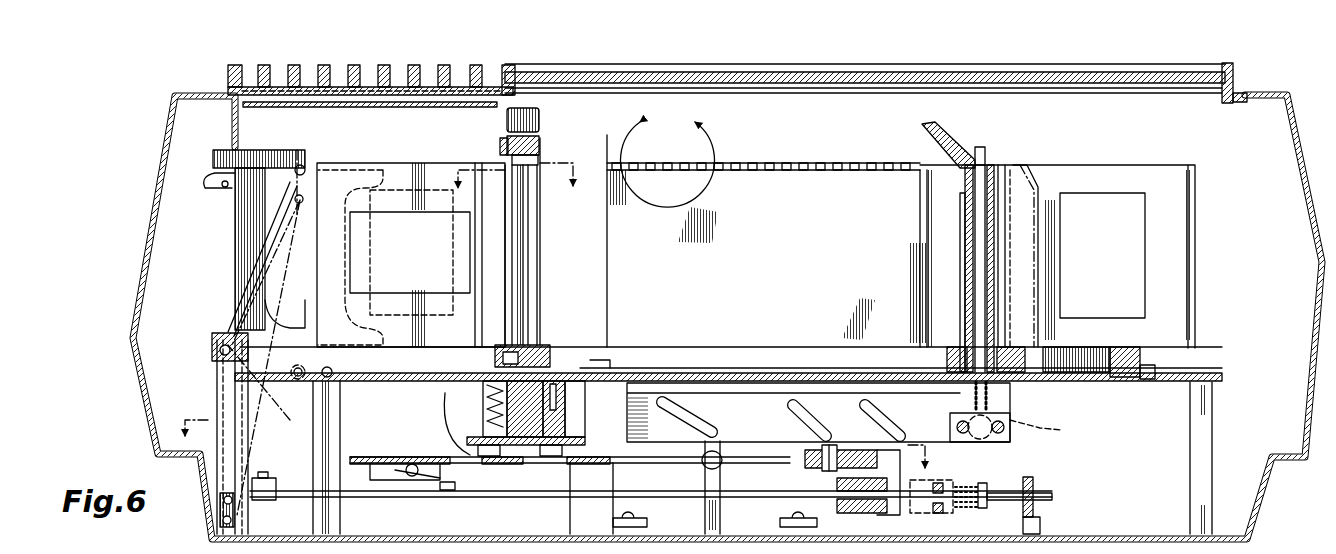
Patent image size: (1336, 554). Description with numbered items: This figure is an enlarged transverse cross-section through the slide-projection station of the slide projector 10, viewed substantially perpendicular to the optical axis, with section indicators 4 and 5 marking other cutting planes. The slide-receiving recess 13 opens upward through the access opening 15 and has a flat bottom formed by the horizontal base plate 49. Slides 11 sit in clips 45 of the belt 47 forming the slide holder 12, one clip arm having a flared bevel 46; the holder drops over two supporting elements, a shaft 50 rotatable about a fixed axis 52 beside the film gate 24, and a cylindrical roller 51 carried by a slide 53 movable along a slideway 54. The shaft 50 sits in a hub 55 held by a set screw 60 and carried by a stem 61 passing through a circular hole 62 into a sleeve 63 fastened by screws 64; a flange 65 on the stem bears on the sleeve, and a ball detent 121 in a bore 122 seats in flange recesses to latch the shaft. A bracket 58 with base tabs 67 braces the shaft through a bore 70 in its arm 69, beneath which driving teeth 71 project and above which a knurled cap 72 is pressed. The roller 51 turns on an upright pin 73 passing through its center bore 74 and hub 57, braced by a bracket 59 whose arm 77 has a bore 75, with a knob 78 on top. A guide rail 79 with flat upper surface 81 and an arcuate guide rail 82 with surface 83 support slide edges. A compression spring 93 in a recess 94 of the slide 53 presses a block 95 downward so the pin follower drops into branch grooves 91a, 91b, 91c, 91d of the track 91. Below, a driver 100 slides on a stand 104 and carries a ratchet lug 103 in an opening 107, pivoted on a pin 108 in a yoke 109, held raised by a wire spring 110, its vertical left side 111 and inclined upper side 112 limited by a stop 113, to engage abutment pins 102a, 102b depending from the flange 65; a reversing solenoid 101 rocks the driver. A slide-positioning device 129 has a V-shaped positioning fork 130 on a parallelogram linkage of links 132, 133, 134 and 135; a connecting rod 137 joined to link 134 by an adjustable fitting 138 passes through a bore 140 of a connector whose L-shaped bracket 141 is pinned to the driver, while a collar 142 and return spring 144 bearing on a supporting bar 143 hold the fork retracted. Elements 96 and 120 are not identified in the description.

The section line 4 is at (668, 159).
The section line 5 is at (508, 189).
The slide projector 10 is at (232, 113).
The slide 11 is at (410, 163).
The slide holder 12 is at (827, 158).
The slide-receiving recess 13 is at (760, 140).
The access opening 15 is at (1218, 98).
The film gate 24 is at (421, 158).
The clip 45 is at (480, 322).
The flared bevel 46 is at (1050, 165).
The belt 47 is at (853, 222).
The base plate 49 is at (800, 372).
The shaft 50 is at (528, 233).
The roller 51 is at (1040, 220).
The fixed axis 52 is at (524, 263).
The slide 53 is at (1045, 386).
The slideway 54 is at (868, 365).
The hub 55 is at (557, 350).
The hub 57 is at (958, 347).
The bracket 58 is at (608, 235).
The bracket 59 is at (920, 260).
The set screw 60 is at (495, 357).
The stem 61 is at (545, 420).
The circular hole 62 is at (487, 395).
The sleeve 63 is at (566, 418).
The screw 64 is at (560, 395).
The flange 65 is at (576, 441).
The base tab 67 is at (595, 368).
The arm 69 is at (503, 150).
The bore 70 is at (540, 140).
The driving teeth 71 is at (540, 163).
The knurled cap 72 is at (540, 118).
The pin 73 is at (965, 240).
The center bore 74 is at (965, 213).
The bore 75 is at (965, 183).
The arm 77 is at (1012, 165).
The knob 78 is at (945, 133).
The guide rail 79 is at (738, 347).
The upper surface 81 is at (760, 348).
The arcuate guide rail 82 is at (1142, 370).
The upper surface 83 is at (1122, 350).
The track 91 is at (882, 392).
The branch groove 91a is at (716, 430).
The branch groove 91b is at (808, 432).
The branch groove 91c is at (900, 432).
The branch groove 91d is at (1053, 430).
The compression spring 93 is at (992, 400).
The recess 94 is at (1022, 360).
The block 95 is at (1003, 442).
The lower element 96 is at (945, 553).
The driver 100 is at (550, 497).
The reversing solenoid 101 is at (570, 476).
The pin 102a is at (538, 445).
The pin 102b is at (586, 464).
The ratchet lug 103 is at (481, 458).
The stand 104 is at (606, 465).
The opening 107 is at (445, 460).
The pin 108 is at (412, 480).
The yoke 109 is at (370, 462).
The wire spring 110 is at (385, 488).
The left side 111 is at (470, 445).
The upper side 112 is at (450, 395).
The stop 113 is at (444, 490).
The post 120 is at (705, 512).
The ball detent 121 is at (525, 385).
The bore 122 is at (487, 405).
The slide-positioning device 129 is at (306, 147).
The positioning fork 130 is at (262, 150).
The link 132 is at (217, 515).
The link 133 is at (258, 260).
The link 134 is at (240, 365).
The link 135 is at (222, 185).
The connecting rod 137 is at (660, 497).
The fitting 138 is at (265, 490).
The bore 140 is at (840, 498).
The L-shaped bracket 141 is at (873, 458).
The collar 142 is at (985, 510).
The supporting bar 143 is at (1042, 523).
The spring 144 is at (1030, 477).